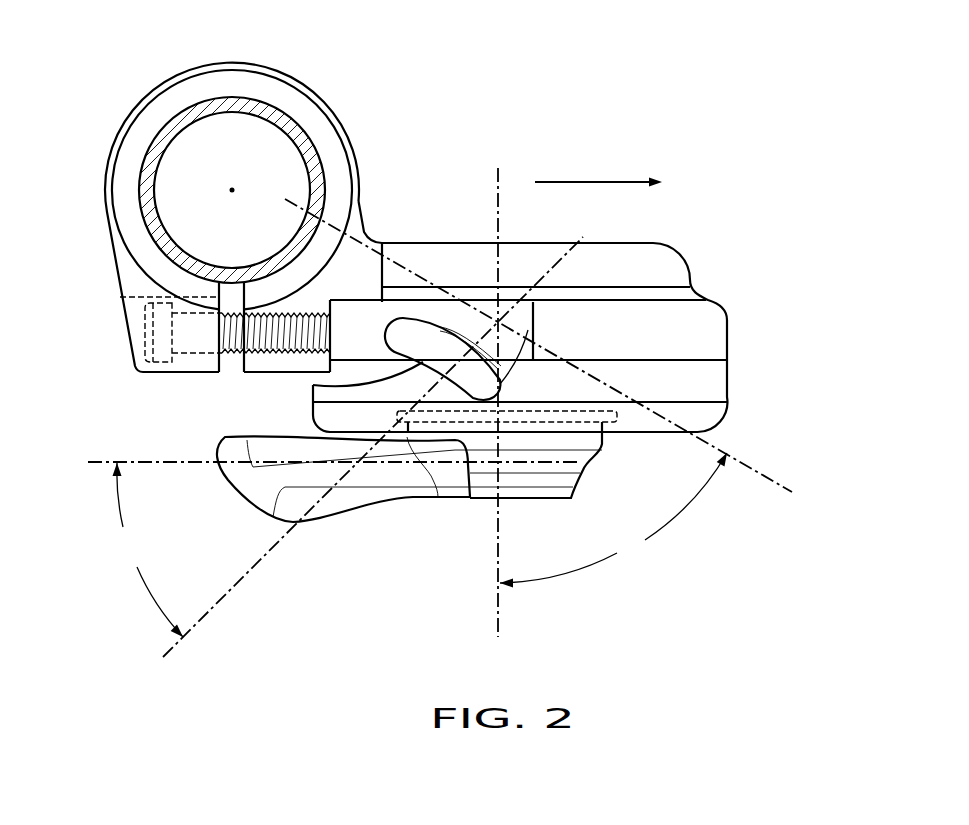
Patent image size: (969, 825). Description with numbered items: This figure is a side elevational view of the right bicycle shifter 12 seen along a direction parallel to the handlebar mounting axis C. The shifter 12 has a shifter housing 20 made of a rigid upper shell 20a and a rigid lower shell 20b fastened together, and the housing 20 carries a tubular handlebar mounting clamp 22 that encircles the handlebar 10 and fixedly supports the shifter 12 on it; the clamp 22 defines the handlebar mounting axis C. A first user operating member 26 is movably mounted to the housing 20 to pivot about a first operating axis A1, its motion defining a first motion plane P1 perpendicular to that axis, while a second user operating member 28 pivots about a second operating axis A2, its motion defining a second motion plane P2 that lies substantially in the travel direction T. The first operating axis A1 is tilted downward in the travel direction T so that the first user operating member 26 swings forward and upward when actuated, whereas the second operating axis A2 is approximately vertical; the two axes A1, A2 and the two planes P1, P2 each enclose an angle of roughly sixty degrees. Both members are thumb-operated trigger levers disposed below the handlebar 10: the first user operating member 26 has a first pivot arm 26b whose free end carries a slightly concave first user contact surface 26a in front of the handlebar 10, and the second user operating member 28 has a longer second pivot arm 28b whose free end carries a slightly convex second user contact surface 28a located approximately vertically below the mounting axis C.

The handlebar 10 is at (270, 102).
The bicycle shifter 12 is at (745, 175).
The shifter housing 20 is at (687, 256).
The rigid upper shell 20a is at (728, 323).
The rigid lower shell 20b is at (728, 384).
The tubular handlebar mounting clamp 22 is at (340, 119).
The first user operating member 26 is at (442, 318).
The first user contact surface 26a is at (313, 385).
The first pivot arm 26b is at (505, 345).
The second user operating member 28 is at (354, 505).
The second user contact surface 28a is at (215, 451).
The second pivot arm 28b is at (393, 478).
The handlebar mounting axis C is at (232, 190).
The travel direction T is at (575, 175).
The first operating axis A1 is at (765, 476).
The second operating axis A2 is at (498, 610).
The first motion plane P1 is at (208, 617).
The second motion plane P2 is at (100, 458).